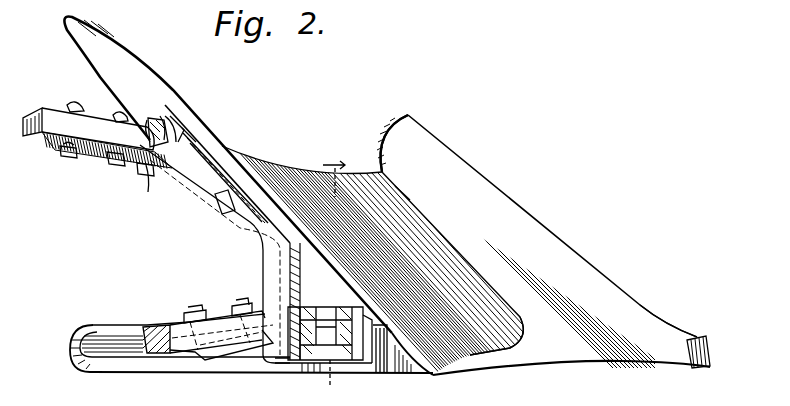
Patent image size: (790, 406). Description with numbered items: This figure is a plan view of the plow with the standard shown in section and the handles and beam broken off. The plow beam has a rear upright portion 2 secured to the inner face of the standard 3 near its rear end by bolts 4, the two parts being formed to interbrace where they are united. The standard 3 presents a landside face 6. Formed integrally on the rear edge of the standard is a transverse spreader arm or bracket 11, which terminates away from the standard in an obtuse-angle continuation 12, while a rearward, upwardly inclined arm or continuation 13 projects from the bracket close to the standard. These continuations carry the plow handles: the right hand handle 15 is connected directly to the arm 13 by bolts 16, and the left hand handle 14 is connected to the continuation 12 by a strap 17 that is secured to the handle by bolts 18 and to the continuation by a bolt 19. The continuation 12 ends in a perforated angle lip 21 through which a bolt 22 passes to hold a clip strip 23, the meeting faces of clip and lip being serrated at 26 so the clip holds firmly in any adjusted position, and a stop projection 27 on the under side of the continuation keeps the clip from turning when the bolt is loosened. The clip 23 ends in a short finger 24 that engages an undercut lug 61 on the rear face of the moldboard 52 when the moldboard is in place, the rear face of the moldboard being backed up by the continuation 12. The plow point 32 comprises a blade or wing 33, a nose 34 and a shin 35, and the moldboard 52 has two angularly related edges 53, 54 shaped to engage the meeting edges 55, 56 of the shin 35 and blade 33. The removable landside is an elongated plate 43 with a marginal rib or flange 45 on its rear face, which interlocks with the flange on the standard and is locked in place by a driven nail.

The rear upright portion 2 is at (362, 368).
The standard 3 is at (310, 370).
The bolts 4 is at (330, 320).
The landside face 6 is at (406, 386).
The transverse spreader arm or bracket 11 is at (270, 273).
The obtuse-angle continuation 12 is at (258, 183).
The arm or continuation 13 is at (233, 352).
The left hand handle 14 is at (36, 107).
The right hand handle 15 is at (158, 324).
The bolts 16 is at (236, 304).
The strap 17 is at (58, 150).
The bolts 18 is at (114, 164).
The bolt 19 is at (221, 213).
The angle lip 21 is at (170, 150).
The bolt 22 is at (153, 120).
The clip strip 23 is at (181, 118).
The short finger 24 is at (191, 130).
The serrations 26 is at (148, 192).
The stop projection 27 is at (170, 118).
The plow point 32 is at (636, 303).
The blade or wing 33 is at (538, 230).
The nose 34 is at (690, 338).
The shin 35 is at (508, 366).
The landside plate 43 is at (147, 372).
The marginal rib or flange 45 is at (93, 336).
The moldboard 52 is at (412, 256).
The edge 53 is at (480, 340).
The edge 54 is at (418, 214).
The meeting edge 55 is at (472, 374).
The meeting edge 56 is at (418, 207).
The undercut lug 61 is at (203, 130).